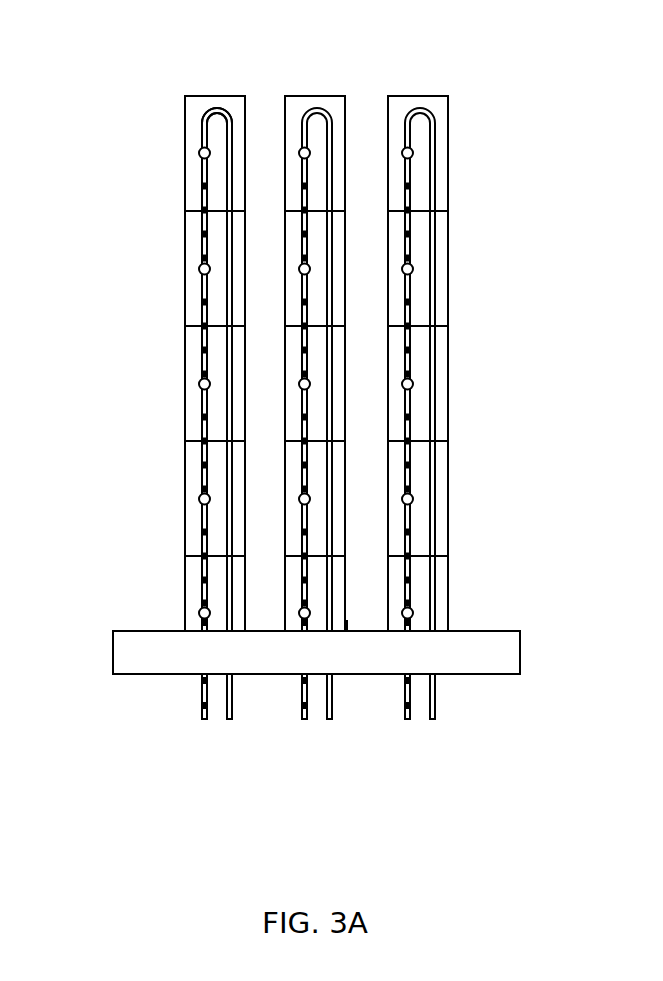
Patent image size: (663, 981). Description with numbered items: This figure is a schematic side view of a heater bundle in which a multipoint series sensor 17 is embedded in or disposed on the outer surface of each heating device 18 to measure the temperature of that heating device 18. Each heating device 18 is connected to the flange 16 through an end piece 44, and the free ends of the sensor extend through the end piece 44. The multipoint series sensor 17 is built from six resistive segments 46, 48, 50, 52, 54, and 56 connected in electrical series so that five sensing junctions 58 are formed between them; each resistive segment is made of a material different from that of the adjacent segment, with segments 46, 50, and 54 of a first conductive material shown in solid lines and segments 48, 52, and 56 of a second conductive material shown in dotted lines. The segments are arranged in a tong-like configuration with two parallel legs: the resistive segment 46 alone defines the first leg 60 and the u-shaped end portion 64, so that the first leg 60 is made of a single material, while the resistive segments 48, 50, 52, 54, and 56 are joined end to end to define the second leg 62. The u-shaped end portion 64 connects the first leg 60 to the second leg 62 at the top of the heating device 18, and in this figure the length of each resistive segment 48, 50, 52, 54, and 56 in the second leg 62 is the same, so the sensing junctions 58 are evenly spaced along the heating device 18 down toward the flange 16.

The flange 16 is at (512, 650).
The multipoint series sensor 17 is at (217, 104).
The heating device 18 is at (203, 83).
The end piece 44 is at (185, 620).
The resistive segment 46 is at (232, 133).
The resistive segment 48 is at (203, 233).
The resistive segment 50 is at (203, 348).
The resistive segment 52 is at (203, 462).
The resistive segment 54 is at (203, 577).
The resistive segment 56 is at (200, 685).
The sensing junction 58 is at (199, 151).
The first leg 60 is at (230, 723).
The second leg 62 is at (204, 723).
The u-shaped end portion 64 is at (209, 112).